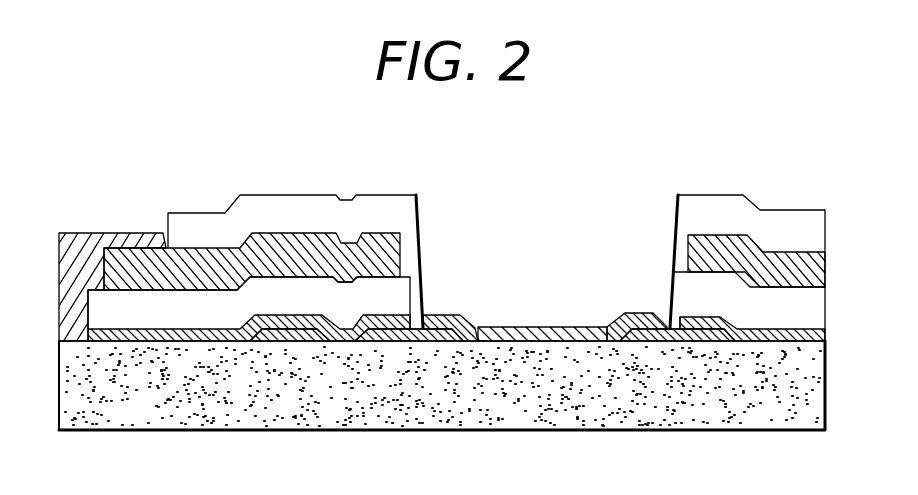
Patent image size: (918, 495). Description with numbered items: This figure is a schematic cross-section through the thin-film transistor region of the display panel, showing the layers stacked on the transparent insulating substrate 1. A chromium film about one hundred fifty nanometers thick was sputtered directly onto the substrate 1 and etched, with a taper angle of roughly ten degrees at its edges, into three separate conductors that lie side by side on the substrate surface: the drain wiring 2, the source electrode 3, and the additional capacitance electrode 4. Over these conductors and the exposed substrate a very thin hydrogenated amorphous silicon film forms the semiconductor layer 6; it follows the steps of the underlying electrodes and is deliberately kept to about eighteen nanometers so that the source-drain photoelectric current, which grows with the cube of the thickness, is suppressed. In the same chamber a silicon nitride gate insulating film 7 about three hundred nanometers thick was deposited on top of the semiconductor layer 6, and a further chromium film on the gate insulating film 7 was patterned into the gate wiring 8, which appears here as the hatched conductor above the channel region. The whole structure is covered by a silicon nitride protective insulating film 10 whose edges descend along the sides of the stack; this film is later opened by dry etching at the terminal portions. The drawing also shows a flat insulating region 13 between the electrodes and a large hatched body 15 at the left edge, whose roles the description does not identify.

The transparent insulating substrate 1 is at (478, 405).
The drain wiring 2 is at (280, 341).
The source electrode 3 is at (397, 341).
The additional capacitance electrode 4 is at (681, 339).
The semiconductor layer 6 is at (668, 316).
The gate insulating film 7 is at (688, 285).
The gate wiring 8 is at (687, 240).
The protective insulating film 10 is at (680, 203).
The interlayer insulating film 13 is at (553, 333).
The electrode 15 is at (88, 236).